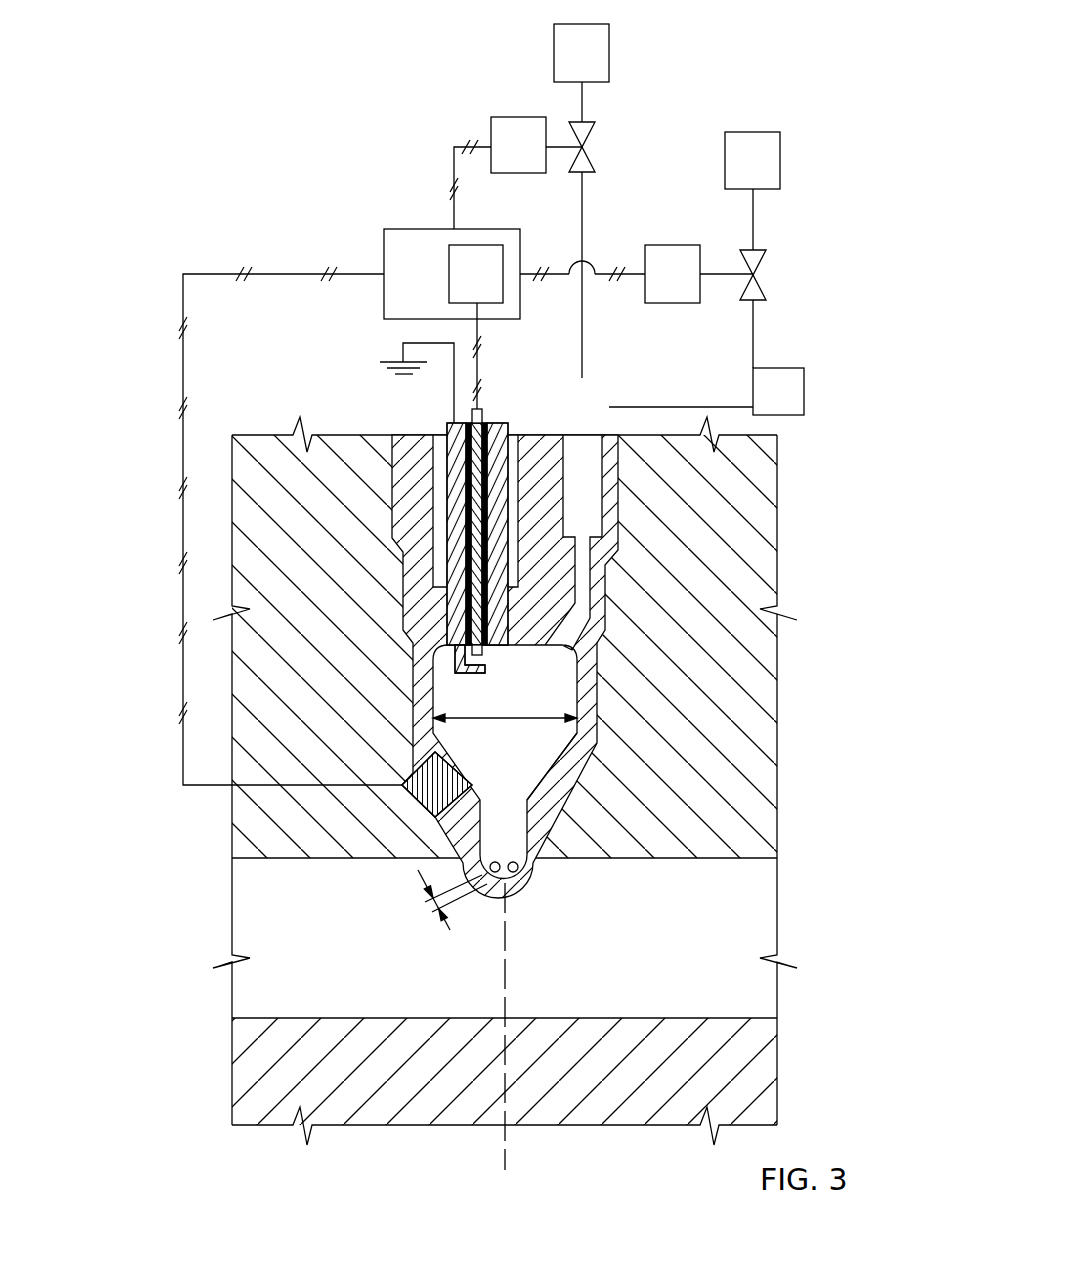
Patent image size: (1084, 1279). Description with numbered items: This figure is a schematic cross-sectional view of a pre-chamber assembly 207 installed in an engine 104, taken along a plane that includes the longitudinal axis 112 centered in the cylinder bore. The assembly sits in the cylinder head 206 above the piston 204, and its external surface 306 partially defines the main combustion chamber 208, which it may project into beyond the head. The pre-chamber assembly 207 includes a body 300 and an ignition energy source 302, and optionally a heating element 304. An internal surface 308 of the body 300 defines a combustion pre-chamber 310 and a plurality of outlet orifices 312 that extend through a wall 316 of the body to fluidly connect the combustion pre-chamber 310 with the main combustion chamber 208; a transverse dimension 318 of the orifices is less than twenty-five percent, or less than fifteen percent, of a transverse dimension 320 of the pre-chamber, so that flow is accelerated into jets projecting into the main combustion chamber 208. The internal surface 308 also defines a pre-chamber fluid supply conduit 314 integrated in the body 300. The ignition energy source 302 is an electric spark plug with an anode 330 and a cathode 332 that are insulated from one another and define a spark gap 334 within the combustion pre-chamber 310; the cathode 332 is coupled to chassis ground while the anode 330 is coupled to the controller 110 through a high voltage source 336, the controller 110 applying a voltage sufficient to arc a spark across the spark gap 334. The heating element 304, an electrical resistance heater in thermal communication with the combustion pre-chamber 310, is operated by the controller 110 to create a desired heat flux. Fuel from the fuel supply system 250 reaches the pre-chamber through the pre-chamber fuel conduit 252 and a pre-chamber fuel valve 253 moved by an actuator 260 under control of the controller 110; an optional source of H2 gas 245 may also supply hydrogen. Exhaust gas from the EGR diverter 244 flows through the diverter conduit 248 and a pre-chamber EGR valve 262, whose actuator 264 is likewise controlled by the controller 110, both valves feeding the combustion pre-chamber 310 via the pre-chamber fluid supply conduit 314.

The engine 104 is at (786, 60).
The controller 110 is at (430, 283).
The longitudinal axis 112 is at (508, 1157).
The piston 204 is at (625, 1079).
The cylinder head 206 is at (766, 742).
The pre-chamber assembly 207 is at (490, 666).
The main combustion chamber 208 is at (675, 966).
The EGR diverter 244 is at (598, 62).
The source of H2 gas 245 is at (778, 391).
The diverter conduit 248 is at (584, 335).
The fuel supply system 250 is at (767, 170).
The pre-chamber fuel conduit 252 is at (754, 343).
The pre-chamber fuel valve 253 is at (760, 284).
The actuator 260 is at (686, 283).
The pre-chamber EGR valve 262 is at (590, 152).
The actuator 264 is at (533, 155).
The body 300 is at (403, 598).
The ignition energy source 302 is at (453, 514).
The heating element 304 is at (417, 805).
The external surface 306 is at (523, 895).
The internal surface 308 is at (552, 770).
The combustion pre-chamber 310 is at (497, 756).
The outlet orifices 312 is at (520, 873).
The pre-chamber fluid supply conduit 314 is at (590, 579).
The wall 316 is at (497, 888).
The transverse dimension 318 is at (430, 901).
The transverse dimension 320 is at (503, 716).
The anode 330 is at (484, 412).
The cathode 332 is at (455, 650).
The spark gap 334 is at (481, 659).
The high voltage source 336 is at (490, 283).